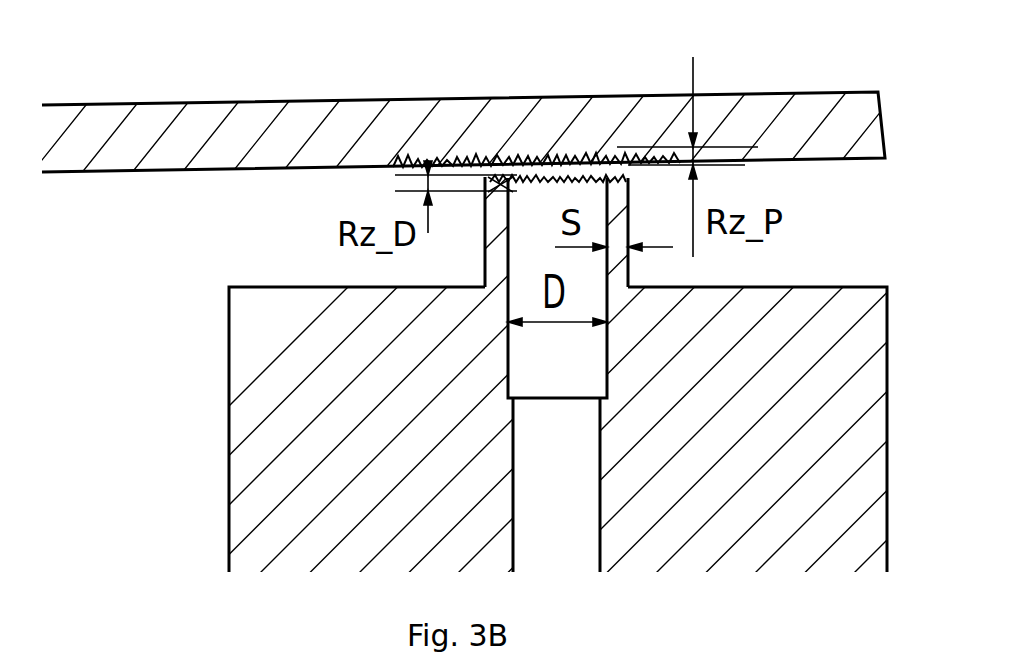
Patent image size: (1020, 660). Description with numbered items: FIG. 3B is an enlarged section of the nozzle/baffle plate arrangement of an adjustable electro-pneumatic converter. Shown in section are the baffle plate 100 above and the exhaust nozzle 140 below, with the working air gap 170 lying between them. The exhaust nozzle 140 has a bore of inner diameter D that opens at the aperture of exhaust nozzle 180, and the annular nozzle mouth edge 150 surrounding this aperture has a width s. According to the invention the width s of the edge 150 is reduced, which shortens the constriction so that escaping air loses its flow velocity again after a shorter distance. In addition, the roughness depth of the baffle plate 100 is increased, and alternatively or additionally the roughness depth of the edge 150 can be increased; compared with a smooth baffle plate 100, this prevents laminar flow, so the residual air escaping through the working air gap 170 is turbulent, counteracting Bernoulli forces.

The baffle plate 100 is at (130, 117).
The exhaust nozzle 140 is at (243, 395).
The edge of exhaust nozzle 150 is at (486, 217).
The working air gap 170 is at (593, 165).
The aperture of exhaust nozzle 180 is at (552, 197).